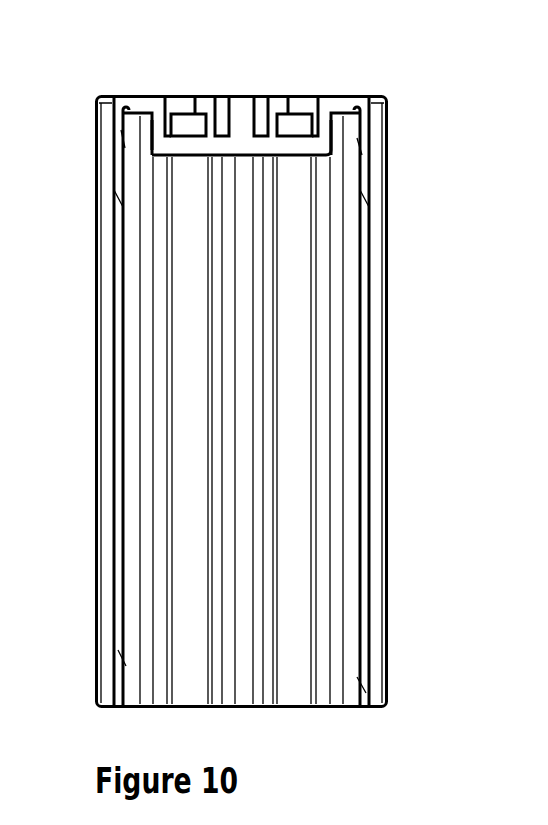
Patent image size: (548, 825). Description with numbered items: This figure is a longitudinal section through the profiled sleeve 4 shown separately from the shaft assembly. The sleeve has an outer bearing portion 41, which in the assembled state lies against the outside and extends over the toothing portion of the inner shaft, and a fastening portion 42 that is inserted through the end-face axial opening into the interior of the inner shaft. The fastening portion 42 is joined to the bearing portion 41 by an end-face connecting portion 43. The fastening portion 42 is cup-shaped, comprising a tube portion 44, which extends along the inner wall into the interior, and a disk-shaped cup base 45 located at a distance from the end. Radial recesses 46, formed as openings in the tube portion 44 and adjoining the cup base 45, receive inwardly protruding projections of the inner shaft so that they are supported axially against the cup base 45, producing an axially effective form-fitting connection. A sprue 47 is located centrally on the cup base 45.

The profiled sleeve 4 is at (472, 60).
The bearing portion 41 is at (377, 368).
The fastening portion 42 is at (303, 109).
The end-face connecting portion 43 is at (349, 99).
The tube portion 44 is at (322, 138).
The cup base 45 is at (237, 149).
The radial recesses 46 is at (298, 126).
The sprue 47 is at (249, 152).